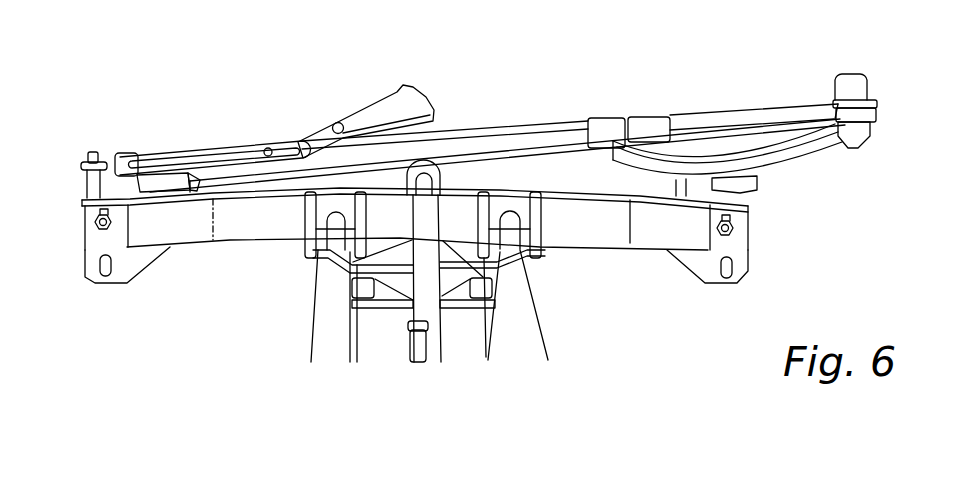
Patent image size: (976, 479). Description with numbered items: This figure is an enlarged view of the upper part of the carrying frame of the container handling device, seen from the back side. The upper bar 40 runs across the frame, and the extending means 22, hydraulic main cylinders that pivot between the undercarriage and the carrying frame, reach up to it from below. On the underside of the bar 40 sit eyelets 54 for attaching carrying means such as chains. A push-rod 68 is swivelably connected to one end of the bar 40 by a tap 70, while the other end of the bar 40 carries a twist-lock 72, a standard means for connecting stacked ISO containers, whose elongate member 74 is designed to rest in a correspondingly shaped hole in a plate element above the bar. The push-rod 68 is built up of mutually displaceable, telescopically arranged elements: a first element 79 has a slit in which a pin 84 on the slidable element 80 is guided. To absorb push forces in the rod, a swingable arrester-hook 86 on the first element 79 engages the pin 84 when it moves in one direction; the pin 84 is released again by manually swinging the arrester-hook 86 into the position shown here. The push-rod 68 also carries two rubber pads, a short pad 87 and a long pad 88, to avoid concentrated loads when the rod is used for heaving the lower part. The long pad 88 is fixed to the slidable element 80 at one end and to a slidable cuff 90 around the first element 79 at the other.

The extending means 22 is at (328, 315).
The bar 40 is at (242, 225).
The eyelets 54 is at (100, 268).
The push-rod 68 is at (514, 118).
The tap 70 is at (93, 153).
The twist-lock 72 is at (878, 85).
The elongate member 74 is at (858, 142).
The first element 79 is at (450, 140).
The element 80 is at (743, 117).
The pin 84 is at (268, 148).
The arrester-hook 86 is at (413, 100).
The short rubber pad 87 is at (153, 182).
The long rubber pad 88 is at (777, 150).
The slidable cuff 90 is at (611, 122).